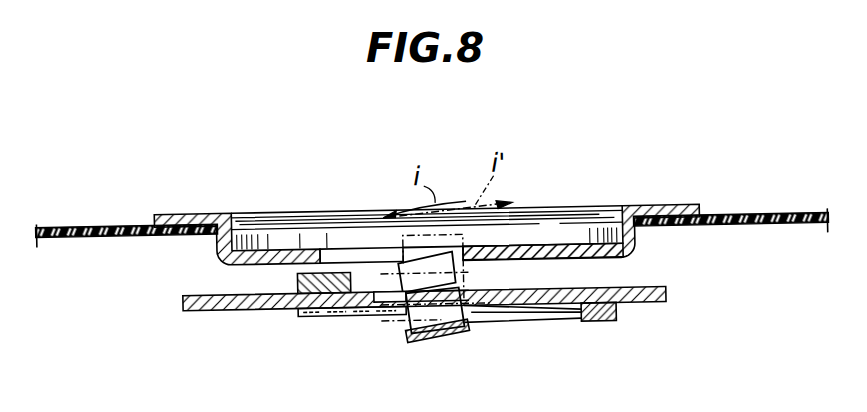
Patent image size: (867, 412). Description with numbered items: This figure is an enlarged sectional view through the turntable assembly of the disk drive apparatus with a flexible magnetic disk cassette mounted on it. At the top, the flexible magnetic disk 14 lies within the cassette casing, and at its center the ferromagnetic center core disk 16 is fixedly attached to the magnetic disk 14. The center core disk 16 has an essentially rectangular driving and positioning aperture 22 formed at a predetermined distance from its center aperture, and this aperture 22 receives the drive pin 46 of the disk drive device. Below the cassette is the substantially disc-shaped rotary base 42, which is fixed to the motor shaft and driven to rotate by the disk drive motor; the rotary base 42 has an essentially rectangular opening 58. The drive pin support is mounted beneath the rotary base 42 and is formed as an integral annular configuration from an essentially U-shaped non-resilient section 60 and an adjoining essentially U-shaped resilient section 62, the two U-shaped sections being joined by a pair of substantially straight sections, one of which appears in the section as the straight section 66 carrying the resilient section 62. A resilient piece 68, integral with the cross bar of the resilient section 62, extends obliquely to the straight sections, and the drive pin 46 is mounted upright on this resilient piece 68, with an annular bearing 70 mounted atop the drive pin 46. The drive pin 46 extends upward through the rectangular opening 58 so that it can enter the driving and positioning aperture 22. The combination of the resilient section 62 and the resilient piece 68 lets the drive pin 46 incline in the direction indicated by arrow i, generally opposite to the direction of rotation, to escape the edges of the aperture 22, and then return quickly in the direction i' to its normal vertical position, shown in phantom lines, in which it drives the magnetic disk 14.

The flexible magnetic disk 14 is at (743, 221).
The center core disk 16 is at (277, 252).
The driving and positioning aperture 22 is at (354, 260).
The rotary base 42 is at (640, 305).
The drive pin 46 is at (515, 250).
The rectangular opening 58 is at (380, 300).
The non-resilient section 60 is at (308, 318).
The resilient section 62 is at (492, 313).
The mounting block 66 is at (596, 326).
The resilient piece 68 is at (460, 333).
The annular bearing 70 is at (455, 262).